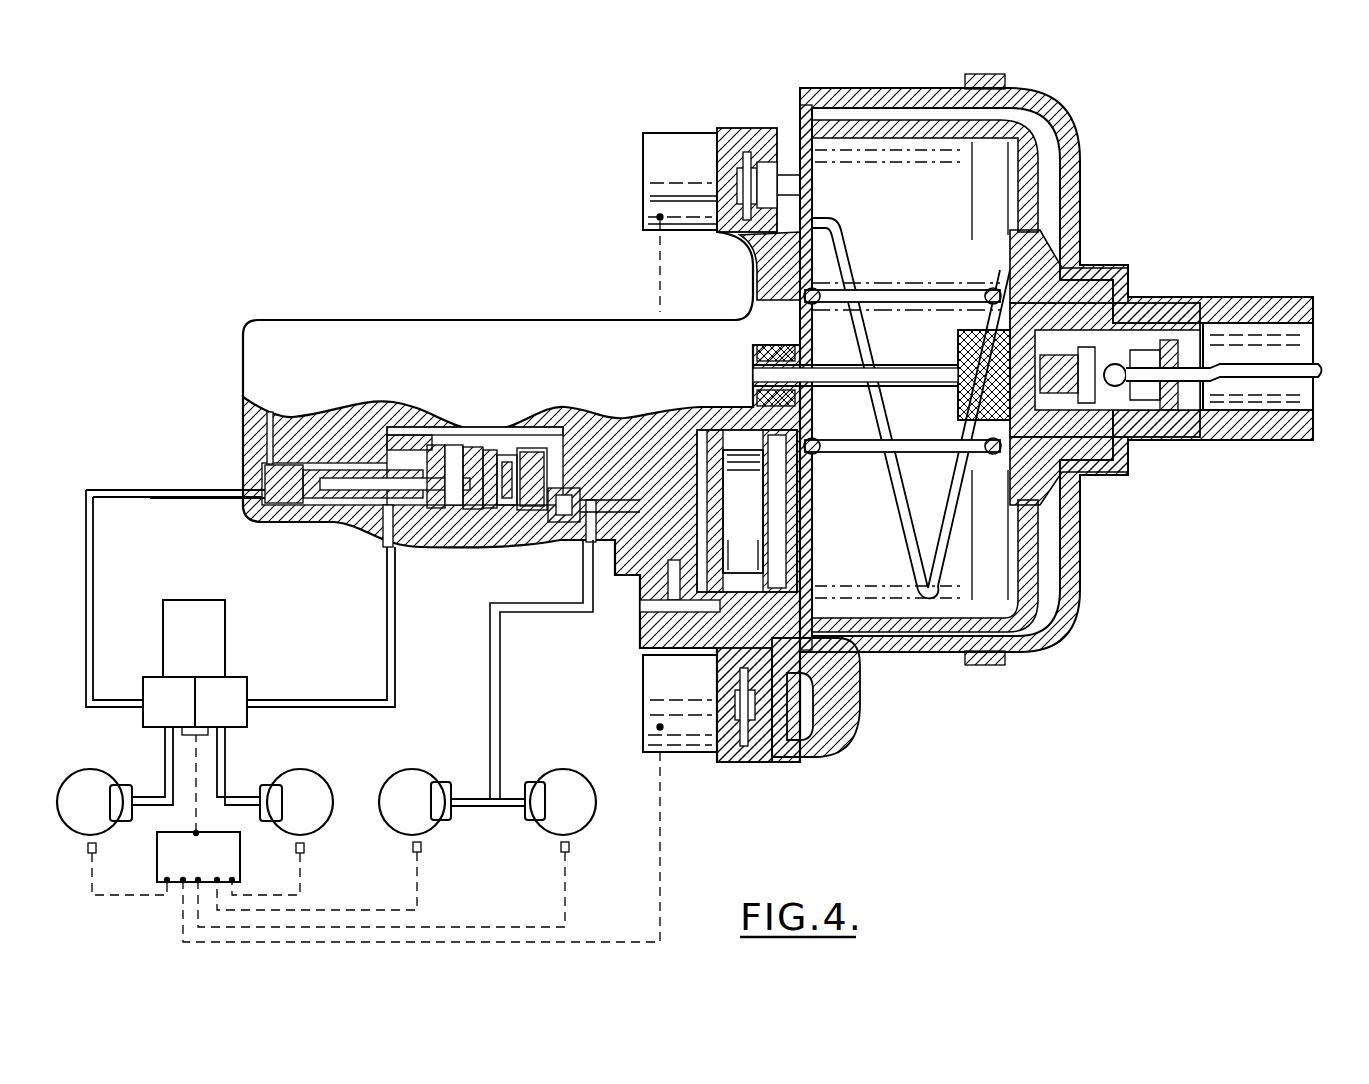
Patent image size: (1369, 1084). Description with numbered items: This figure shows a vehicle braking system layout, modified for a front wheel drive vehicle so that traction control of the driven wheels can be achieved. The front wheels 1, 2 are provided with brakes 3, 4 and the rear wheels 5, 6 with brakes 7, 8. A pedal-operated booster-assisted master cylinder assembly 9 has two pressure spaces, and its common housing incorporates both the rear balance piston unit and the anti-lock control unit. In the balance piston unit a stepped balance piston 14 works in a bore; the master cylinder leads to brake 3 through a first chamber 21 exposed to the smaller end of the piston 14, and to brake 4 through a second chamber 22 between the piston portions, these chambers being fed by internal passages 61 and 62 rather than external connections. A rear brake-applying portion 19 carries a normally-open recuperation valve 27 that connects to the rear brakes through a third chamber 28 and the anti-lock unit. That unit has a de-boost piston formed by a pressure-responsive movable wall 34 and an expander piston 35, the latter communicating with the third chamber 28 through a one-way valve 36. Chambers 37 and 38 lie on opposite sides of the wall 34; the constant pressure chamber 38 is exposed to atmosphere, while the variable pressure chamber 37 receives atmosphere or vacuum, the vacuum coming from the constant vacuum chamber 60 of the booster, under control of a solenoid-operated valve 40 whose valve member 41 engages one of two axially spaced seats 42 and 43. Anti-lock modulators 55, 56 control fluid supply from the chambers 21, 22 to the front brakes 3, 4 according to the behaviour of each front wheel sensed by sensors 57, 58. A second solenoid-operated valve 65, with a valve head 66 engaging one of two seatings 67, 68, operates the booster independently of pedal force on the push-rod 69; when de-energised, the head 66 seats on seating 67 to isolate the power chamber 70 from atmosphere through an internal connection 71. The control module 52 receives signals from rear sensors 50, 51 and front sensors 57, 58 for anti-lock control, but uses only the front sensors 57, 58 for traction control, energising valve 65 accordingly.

The front wheel 1 is at (82, 792).
The front wheel 2 is at (310, 790).
The front wheel brake 3 is at (120, 798).
The front wheel brake 4 is at (270, 800).
The rear wheel 5 is at (415, 785).
The rear wheel 6 is at (567, 785).
The rear wheel brake 7 is at (445, 796).
The rear wheel brake 8 is at (537, 796).
The booster-assisted master cylinder assembly 9 is at (531, 345).
The balance piston 14 is at (298, 432).
The rear brake-applying portion 19 is at (470, 520).
The first chamber 21 is at (270, 503).
The second chamber 22 is at (360, 525).
The recuperation valve 27 is at (495, 520).
The third chamber 28 is at (525, 515).
The pressure-responsive movable wall 34 is at (728, 488).
The expander piston 35 is at (606, 500).
The one-way valve 36 is at (568, 490).
The variable pressure chamber 37 is at (700, 445).
The constant pressure chamber 38 is at (770, 536).
The solenoid-operated valve 40 is at (668, 685).
The valve member 41 is at (756, 740).
The valve seat 42 is at (748, 745).
The valve seat 43 is at (790, 725).
The wheel speed sensor 50 is at (422, 848).
The wheel speed sensor 51 is at (560, 848).
The control module 52 is at (218, 873).
The anti-lock modulator 55 is at (160, 690).
The anti-lock modulator 56 is at (235, 690).
The wheel speed sensor 57 is at (97, 848).
The wheel speed sensor 58 is at (305, 848).
The constant vacuum chamber 60 is at (906, 598).
The internal passage 61 is at (268, 428).
The internal passage 62 is at (392, 422).
The second solenoid-operated valve 65 is at (670, 172).
The valve head 66 is at (760, 168).
The seating 67 is at (740, 165).
The seating 68 is at (785, 168).
The push-rod 69 is at (1290, 377).
The power chamber 70 is at (1052, 600).
The internal connection 71 is at (850, 335).